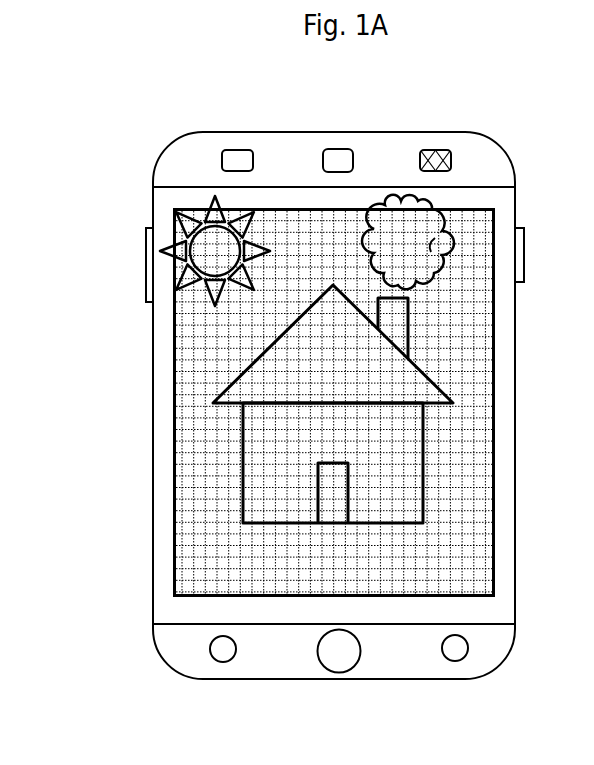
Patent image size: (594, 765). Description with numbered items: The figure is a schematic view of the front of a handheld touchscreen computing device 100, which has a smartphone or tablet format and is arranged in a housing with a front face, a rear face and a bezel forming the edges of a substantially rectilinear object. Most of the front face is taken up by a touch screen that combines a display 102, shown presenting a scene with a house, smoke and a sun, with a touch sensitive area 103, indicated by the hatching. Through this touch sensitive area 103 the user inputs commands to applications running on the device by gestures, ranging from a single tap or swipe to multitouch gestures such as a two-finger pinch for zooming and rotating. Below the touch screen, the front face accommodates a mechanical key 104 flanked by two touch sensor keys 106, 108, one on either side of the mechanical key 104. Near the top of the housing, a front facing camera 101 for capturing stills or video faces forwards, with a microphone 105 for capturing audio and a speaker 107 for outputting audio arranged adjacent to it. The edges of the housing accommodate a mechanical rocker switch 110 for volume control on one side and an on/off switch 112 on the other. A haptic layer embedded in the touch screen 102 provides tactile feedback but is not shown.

The computing device 100 is at (170, 125).
The front facing camera 101 is at (340, 149).
The display 102 is at (203, 618).
The touch sensitive area 103 is at (173, 474).
The mechanical key 104 is at (324, 672).
The microphone 105 is at (240, 149).
The touch sensor key 106 is at (218, 663).
The speaker 107 is at (437, 150).
The touch sensor key 108 is at (449, 661).
The mechanical rocker switch 110 is at (143, 240).
The on/off switch 112 is at (526, 245).